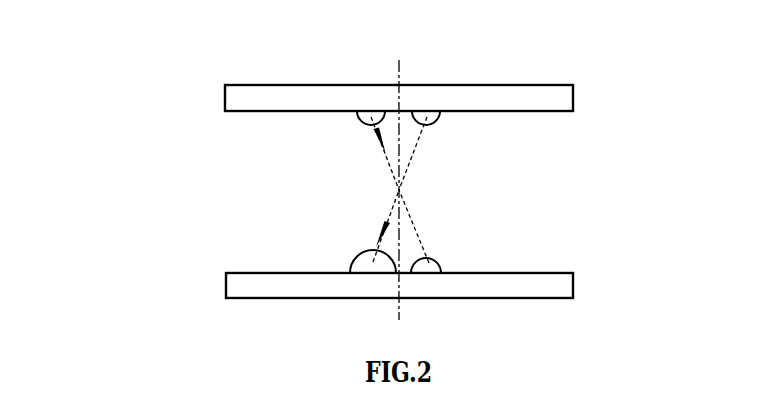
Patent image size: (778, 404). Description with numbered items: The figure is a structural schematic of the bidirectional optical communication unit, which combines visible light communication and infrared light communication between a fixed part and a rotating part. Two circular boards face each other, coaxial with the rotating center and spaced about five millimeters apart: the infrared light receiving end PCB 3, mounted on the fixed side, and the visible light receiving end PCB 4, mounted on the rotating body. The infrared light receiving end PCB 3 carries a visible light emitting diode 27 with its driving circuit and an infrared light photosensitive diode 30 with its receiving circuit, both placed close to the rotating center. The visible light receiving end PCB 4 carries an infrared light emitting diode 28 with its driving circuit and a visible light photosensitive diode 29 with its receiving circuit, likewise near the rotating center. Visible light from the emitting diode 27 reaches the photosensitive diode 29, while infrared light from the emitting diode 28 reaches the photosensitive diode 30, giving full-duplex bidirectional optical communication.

The infrared light receiving end PCB 3 is at (301, 64).
The visible light receiving end PCB 4 is at (483, 269).
The visible light emitting diode 27 is at (576, 135).
The infrared light emitting diode 28 is at (575, 222).
The visible light photosensitive diode 29 is at (213, 222).
The infrared light photosensitive diode 30 is at (207, 120).